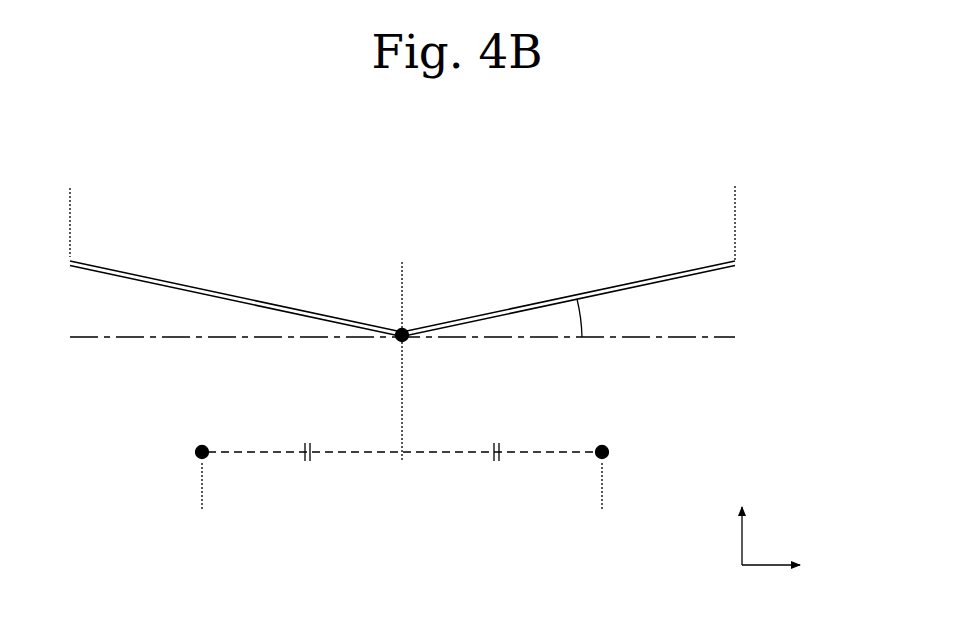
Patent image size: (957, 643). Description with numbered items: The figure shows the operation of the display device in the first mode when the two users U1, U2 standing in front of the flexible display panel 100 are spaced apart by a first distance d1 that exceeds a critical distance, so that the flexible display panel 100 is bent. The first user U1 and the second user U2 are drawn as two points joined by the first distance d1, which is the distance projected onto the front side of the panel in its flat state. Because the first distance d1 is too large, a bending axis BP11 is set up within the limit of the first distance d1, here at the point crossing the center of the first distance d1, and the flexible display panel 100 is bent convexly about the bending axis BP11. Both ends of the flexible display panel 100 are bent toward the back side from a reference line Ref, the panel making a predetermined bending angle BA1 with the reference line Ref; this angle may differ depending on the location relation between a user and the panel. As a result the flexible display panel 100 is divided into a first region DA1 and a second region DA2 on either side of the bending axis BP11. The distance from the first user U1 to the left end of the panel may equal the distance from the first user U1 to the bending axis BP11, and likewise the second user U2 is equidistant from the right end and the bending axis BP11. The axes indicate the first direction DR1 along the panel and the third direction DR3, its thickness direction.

The flexible display panel 100 is at (737, 262).
The bending axis BP11 is at (407, 325).
The first region DA1 is at (402, 263).
The second region DA2 is at (735, 194).
The bending angle BA1 is at (602, 318).
The reference line Ref is at (708, 339).
The first user U1 is at (204, 445).
The second user U2 is at (604, 445).
The first distance d1 is at (602, 502).
The first direction DR1 is at (795, 566).
The third direction DR3 is at (744, 524).